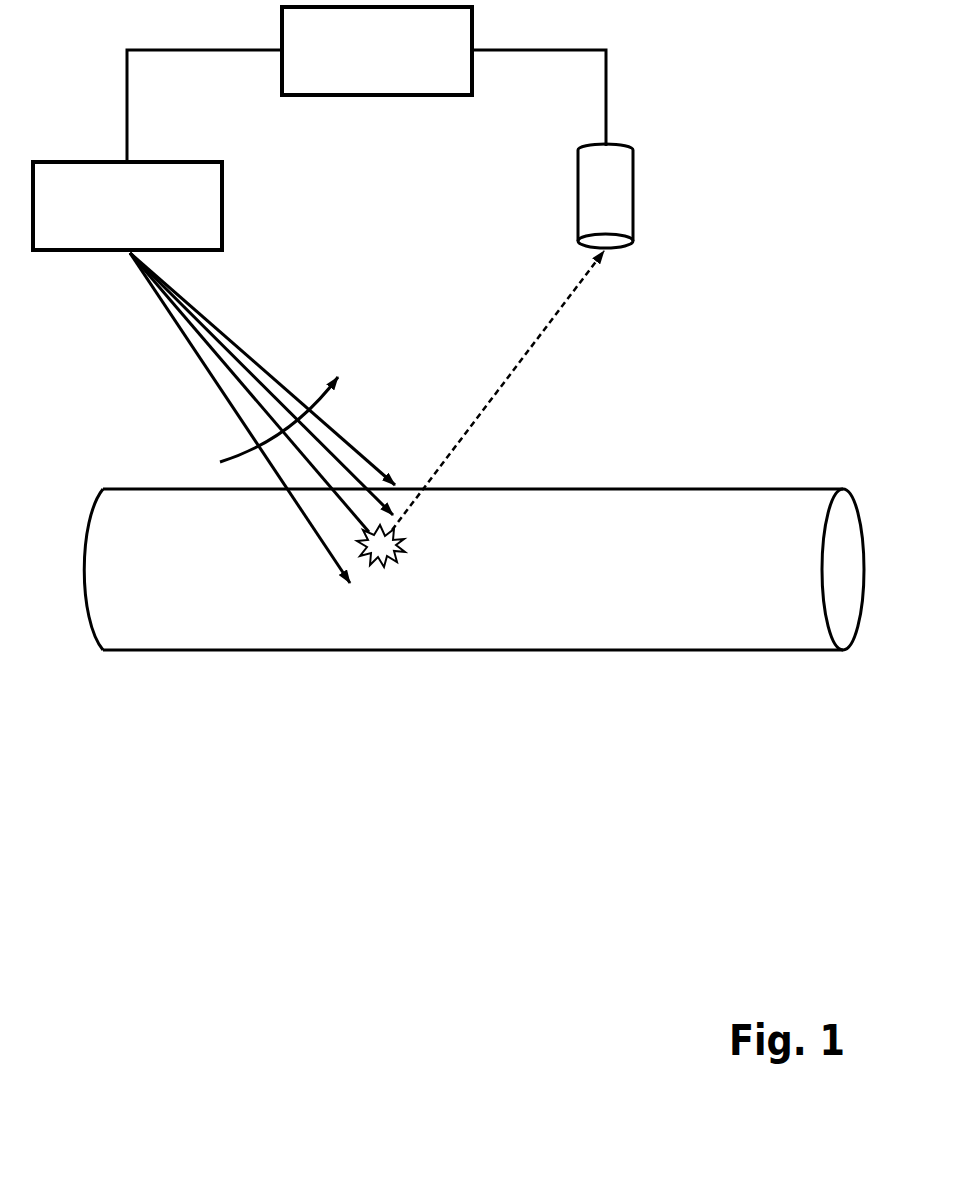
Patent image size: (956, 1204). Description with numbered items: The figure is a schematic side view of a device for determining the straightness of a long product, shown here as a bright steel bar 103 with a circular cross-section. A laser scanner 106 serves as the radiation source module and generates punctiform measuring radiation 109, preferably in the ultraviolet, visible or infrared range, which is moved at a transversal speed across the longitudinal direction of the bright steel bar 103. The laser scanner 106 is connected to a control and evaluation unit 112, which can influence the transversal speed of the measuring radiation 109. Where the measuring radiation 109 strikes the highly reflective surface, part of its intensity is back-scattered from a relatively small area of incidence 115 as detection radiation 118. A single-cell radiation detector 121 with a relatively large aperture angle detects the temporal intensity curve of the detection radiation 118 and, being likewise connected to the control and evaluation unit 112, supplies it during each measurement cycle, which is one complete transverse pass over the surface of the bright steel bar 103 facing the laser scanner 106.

The bright steel bar 103 is at (583, 585).
The laser scanner 106 is at (152, 221).
The measuring radiation 109 is at (270, 373).
The control and evaluation unit 112 is at (402, 65).
The area of incidence 115 is at (392, 558).
The detection radiation 118 is at (513, 368).
The radiation detector 121 is at (607, 193).